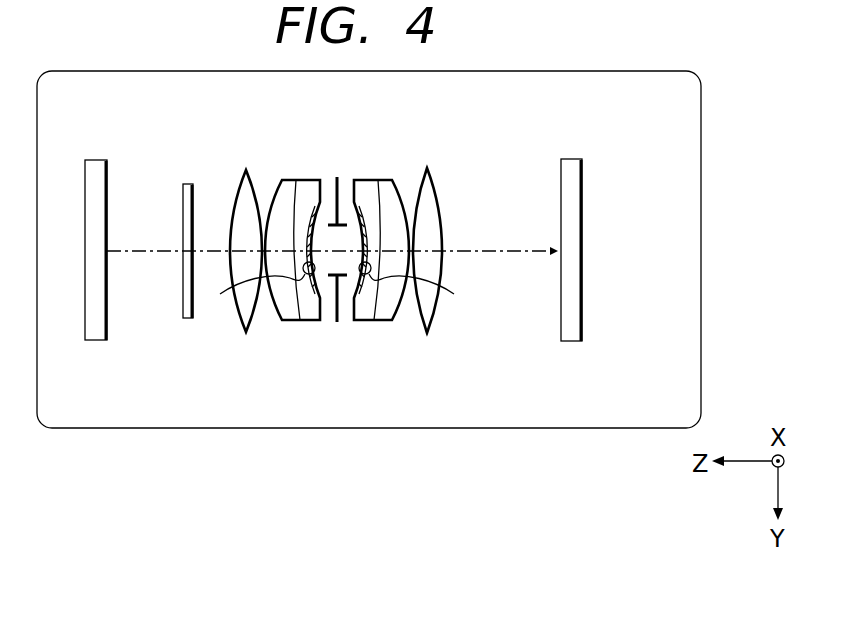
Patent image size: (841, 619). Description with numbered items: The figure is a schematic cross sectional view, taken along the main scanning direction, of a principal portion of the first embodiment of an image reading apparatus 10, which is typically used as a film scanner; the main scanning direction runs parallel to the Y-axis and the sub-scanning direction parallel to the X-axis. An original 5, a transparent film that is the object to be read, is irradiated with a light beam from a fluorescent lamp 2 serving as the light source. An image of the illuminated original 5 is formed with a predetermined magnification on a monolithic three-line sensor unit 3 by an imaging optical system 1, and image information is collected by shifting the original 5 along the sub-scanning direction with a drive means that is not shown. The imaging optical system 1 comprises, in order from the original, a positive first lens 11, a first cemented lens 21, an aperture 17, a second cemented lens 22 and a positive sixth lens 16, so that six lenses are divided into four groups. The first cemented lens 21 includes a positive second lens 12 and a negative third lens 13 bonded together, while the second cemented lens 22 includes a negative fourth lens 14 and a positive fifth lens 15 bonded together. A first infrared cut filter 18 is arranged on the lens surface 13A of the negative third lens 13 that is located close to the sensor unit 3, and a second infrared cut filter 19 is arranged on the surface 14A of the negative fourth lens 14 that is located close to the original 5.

The imaging optical system 1 is at (435, 132).
The fluorescent lamp 2 is at (92, 170).
The monolithic 3-line sensor unit 3 is at (568, 170).
The original 5 is at (185, 185).
The image reading apparatus 10 is at (650, 67).
The positive first lens 11 is at (247, 316).
The positive second lens 12 is at (282, 318).
The negative third lens 13 is at (299, 256).
The lens surface 13A is at (313, 215).
The negative fourth lens 14 is at (384, 256).
The surface 14A is at (361, 215).
The positive fifth lens 15 is at (391, 318).
The positive sixth lens 16 is at (430, 318).
The aperture 17 is at (341, 322).
The first infrared cut filter 18 is at (258, 292).
The second infrared cut filter 19 is at (418, 292).
The first cemented lens 21 is at (292, 276).
The second cemented lens 22 is at (387, 276).